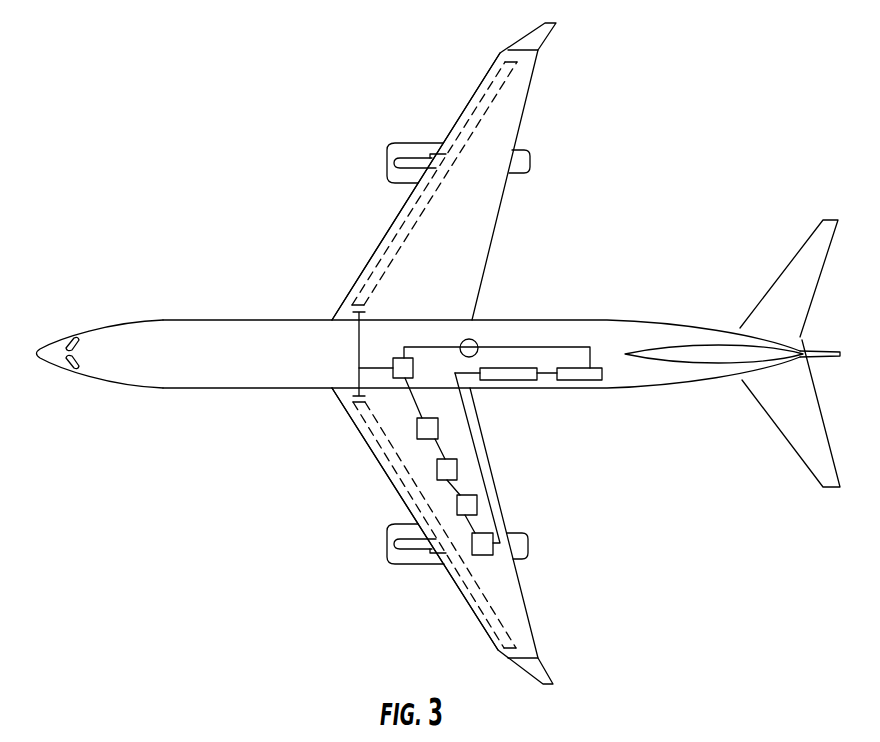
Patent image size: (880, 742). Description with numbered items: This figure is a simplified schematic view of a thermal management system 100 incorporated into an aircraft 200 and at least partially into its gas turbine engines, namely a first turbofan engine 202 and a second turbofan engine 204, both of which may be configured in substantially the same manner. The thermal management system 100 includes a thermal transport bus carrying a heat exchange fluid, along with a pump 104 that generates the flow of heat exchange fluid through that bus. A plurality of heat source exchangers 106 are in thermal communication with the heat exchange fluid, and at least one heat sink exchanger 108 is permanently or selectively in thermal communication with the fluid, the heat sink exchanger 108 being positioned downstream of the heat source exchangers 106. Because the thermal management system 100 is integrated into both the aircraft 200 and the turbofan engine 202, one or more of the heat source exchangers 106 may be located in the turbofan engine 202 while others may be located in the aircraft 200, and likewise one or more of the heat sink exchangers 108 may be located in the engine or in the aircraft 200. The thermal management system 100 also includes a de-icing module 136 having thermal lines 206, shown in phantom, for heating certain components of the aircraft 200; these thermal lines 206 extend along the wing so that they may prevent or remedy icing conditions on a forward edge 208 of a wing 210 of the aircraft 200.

The thermal management system 100 is at (536, 329).
The pump 104 is at (470, 339).
The heat source exchangers 106 is at (425, 440).
The heat sink exchanger 108 is at (517, 380).
The de-icing module 136 is at (394, 343).
The aircraft 200 is at (122, 182).
The first turbofan engine 202 is at (418, 556).
The second turbofan engine 204 is at (418, 148).
The thermal lines 206 is at (380, 268).
The forward edge 208 is at (396, 220).
The wing 210 is at (482, 222).